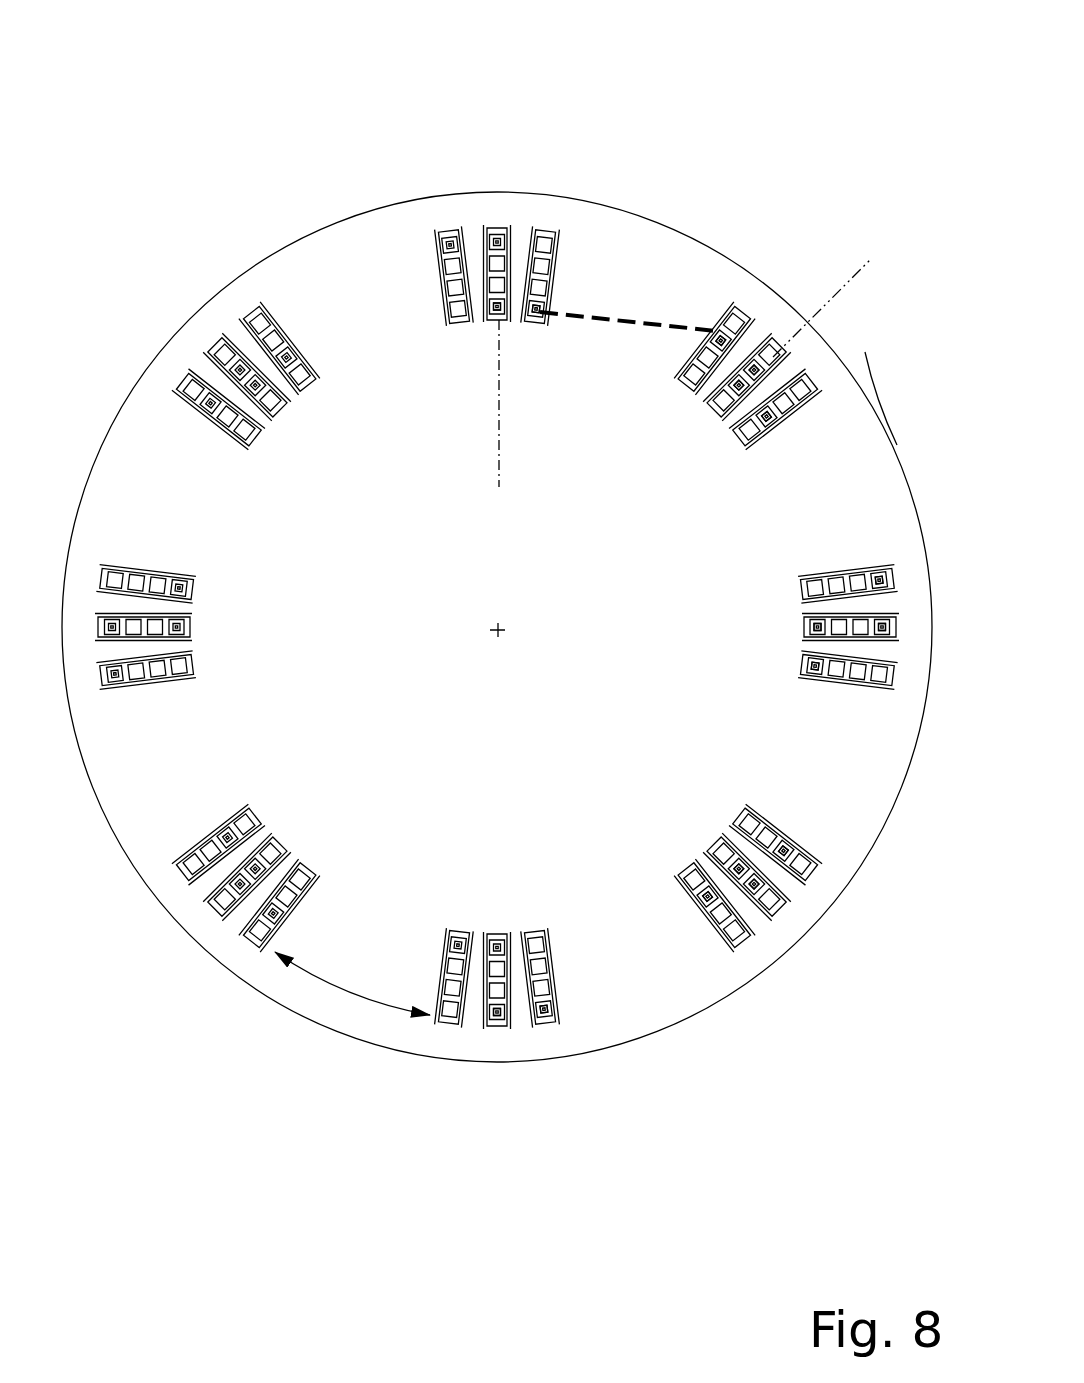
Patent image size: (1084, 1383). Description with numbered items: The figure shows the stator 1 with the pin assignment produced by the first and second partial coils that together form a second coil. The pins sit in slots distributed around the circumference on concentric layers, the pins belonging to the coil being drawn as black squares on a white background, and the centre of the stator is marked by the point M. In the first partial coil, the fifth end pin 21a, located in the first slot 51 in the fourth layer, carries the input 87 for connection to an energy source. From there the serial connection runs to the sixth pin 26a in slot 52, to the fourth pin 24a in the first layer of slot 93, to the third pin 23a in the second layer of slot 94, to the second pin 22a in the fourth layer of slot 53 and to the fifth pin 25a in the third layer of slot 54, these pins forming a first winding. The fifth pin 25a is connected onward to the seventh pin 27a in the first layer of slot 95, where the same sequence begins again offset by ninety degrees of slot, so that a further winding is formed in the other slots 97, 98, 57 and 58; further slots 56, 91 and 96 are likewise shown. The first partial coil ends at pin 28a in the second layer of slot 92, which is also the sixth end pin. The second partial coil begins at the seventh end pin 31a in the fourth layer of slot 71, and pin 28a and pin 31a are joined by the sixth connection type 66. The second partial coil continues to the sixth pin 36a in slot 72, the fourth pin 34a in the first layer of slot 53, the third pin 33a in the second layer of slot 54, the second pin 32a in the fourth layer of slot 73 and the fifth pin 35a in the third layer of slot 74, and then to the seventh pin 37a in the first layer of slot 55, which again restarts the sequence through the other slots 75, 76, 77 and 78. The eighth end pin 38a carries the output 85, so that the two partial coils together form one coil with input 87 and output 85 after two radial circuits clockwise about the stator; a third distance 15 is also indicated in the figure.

The stator 1 is at (596, 50).
The third distance 15 is at (316, 967).
The fifth end pin 21a is at (502, 320).
The second pin 22a is at (817, 627).
The third pin 23a is at (785, 848).
The fourth pin 24a is at (880, 580).
The fifth pin 25a is at (740, 867).
The sixth pin 26a is at (738, 386).
The seventh pin 27a is at (548, 1003).
The sixth end pin 28a is at (722, 337).
The seventh end pin 31a is at (548, 317).
The second pin 32a is at (814, 668).
The third pin 33a is at (760, 886).
The fourth pin 34a is at (882, 626).
The fifth pin 35a is at (708, 896).
The sixth pin 36a is at (768, 420).
The seventh pin 37a is at (508, 1010).
The eighth end pin 38a is at (760, 370).
The first slot 51 is at (508, 222).
The slot 52 is at (787, 337).
The slot 53 is at (902, 650).
The slot 54 is at (795, 923).
The slot 55 is at (505, 1035).
The coil 56 is at (213, 913).
The slot 57 is at (98, 648).
The slot 58 is at (213, 345).
The sixth connection type 66 is at (626, 318).
The slot 71 is at (568, 226).
The slot 72 is at (823, 372).
The slot 73 is at (862, 698).
The slot 74 is at (751, 954).
The slot 75 is at (445, 1030).
The slot 76 is at (180, 877).
The slot 77 is at (122, 553).
The slot 78 is at (255, 312).
The output 85 is at (868, 398).
The input 87 is at (502, 447).
The coil 91 is at (442, 226).
The slot 92 is at (747, 302).
The slot 93 is at (878, 557).
The slot 94 is at (822, 882).
The slot 95 is at (563, 1030).
The coil 96 is at (253, 948).
The slot 97 is at (138, 697).
The slot 98 is at (180, 385).
The center point M is at (507, 635).